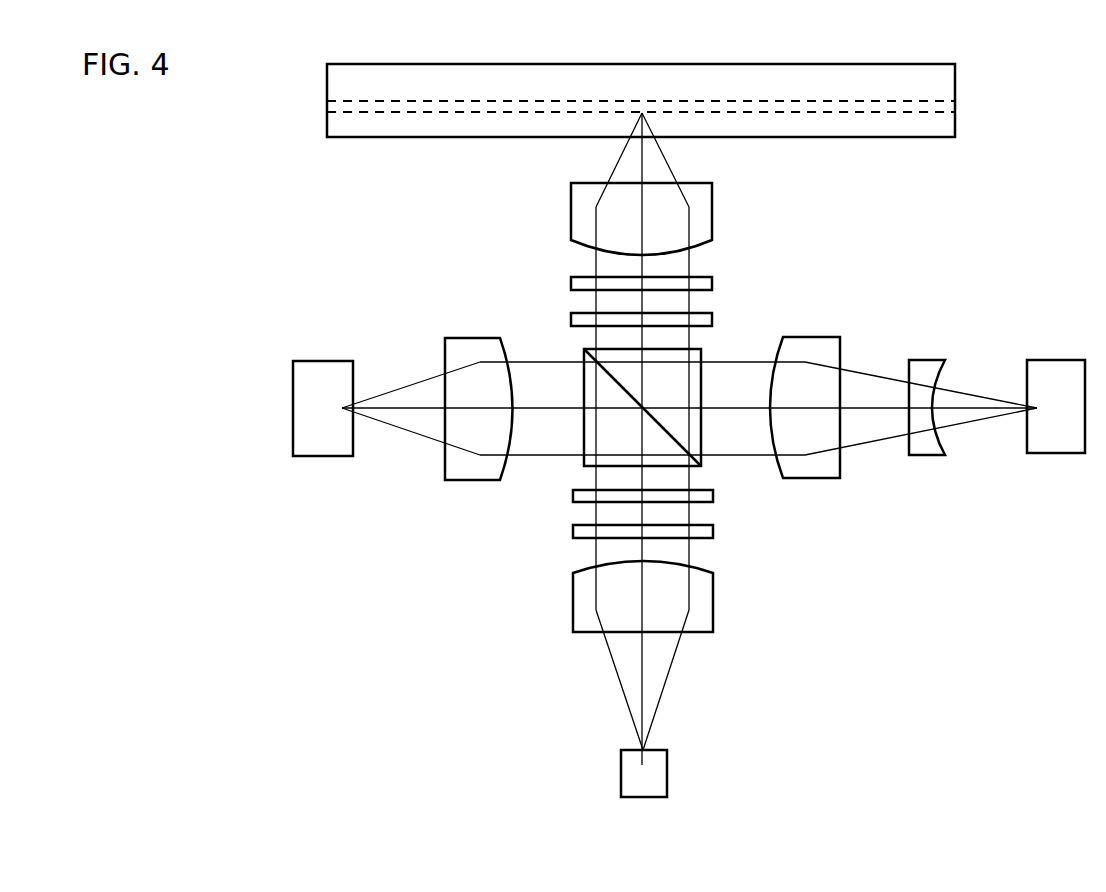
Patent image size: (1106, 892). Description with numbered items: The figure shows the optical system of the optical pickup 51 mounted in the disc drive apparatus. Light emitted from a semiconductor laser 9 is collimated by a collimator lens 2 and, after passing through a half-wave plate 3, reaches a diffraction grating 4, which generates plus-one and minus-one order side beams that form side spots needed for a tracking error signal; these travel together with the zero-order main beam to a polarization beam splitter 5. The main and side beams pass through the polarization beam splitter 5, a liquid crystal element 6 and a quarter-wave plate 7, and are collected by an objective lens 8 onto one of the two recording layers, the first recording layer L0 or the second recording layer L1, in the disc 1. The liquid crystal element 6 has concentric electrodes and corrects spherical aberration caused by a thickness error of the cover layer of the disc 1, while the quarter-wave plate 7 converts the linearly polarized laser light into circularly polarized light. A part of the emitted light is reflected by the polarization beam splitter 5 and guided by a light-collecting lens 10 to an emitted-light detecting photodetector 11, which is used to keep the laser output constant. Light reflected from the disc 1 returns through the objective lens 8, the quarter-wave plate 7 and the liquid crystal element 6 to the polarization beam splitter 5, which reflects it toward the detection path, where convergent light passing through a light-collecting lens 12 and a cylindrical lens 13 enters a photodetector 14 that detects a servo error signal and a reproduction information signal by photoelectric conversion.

The disc 1 is at (656, 104).
The layer 0 L0 is at (957, 100).
The layer 1 L1 is at (957, 113).
The collimator lens 2 is at (713, 608).
The half-wave plate 3 is at (573, 532).
The diffraction grating 4 is at (573, 497).
The polarization beam splitter 5 is at (584, 352).
The liquid crystal element 6 is at (714, 320).
The quarter-wave plate 7 is at (714, 283).
The objective lens 8 is at (714, 215).
The semiconductor laser 9 is at (667, 772).
The light-collecting lens 10 is at (482, 338).
The emitted-light detecting photodetector 11 is at (318, 361).
The light-collecting lens 12 is at (818, 478).
The cylindrical lens 13 is at (925, 455).
The photodetector 14 is at (1047, 360).
The optical pickup 51 is at (1012, 689).